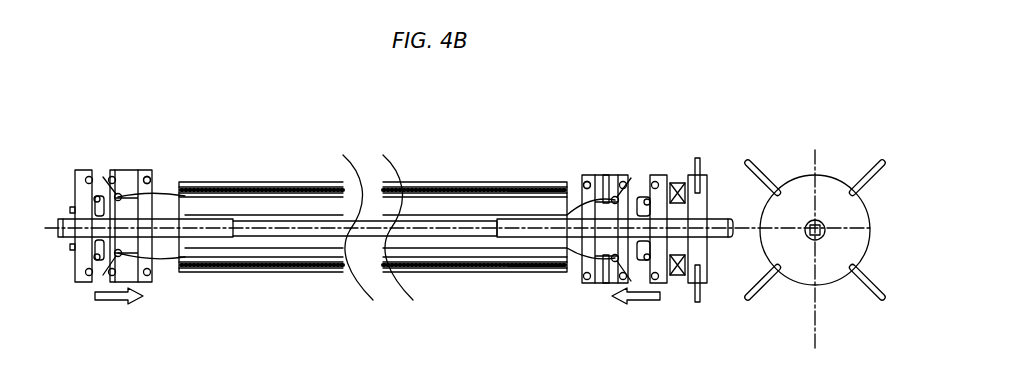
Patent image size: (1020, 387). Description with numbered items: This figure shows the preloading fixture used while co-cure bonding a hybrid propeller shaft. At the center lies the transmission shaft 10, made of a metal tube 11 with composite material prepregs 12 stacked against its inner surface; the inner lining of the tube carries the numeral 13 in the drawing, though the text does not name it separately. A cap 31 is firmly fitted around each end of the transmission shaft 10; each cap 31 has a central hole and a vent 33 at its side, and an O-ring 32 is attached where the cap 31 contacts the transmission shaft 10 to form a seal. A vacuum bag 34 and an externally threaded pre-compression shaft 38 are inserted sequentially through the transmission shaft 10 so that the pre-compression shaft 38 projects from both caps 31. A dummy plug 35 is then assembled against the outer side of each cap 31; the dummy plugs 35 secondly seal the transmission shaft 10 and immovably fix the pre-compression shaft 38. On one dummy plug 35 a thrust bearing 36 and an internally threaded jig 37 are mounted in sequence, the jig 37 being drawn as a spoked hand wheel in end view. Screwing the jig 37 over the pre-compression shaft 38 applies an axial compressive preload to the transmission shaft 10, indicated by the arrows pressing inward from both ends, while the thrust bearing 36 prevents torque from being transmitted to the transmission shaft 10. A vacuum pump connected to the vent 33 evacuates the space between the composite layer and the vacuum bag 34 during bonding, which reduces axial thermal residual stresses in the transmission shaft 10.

The transmission shaft 10 is at (366, 220).
The metal tube 11 is at (204, 274).
The composite material prepregs 12 is at (257, 274).
The inner tube 13 is at (290, 274).
The cap 31 is at (133, 164).
The O-ring 32 is at (150, 178).
The vent 33 is at (607, 175).
The vacuum bag 34 is at (158, 250).
The dummy plug 35 is at (85, 170).
The thrust bearing 36 is at (676, 278).
The jig 37 is at (706, 275).
The pre-compression shaft 38 is at (473, 232).